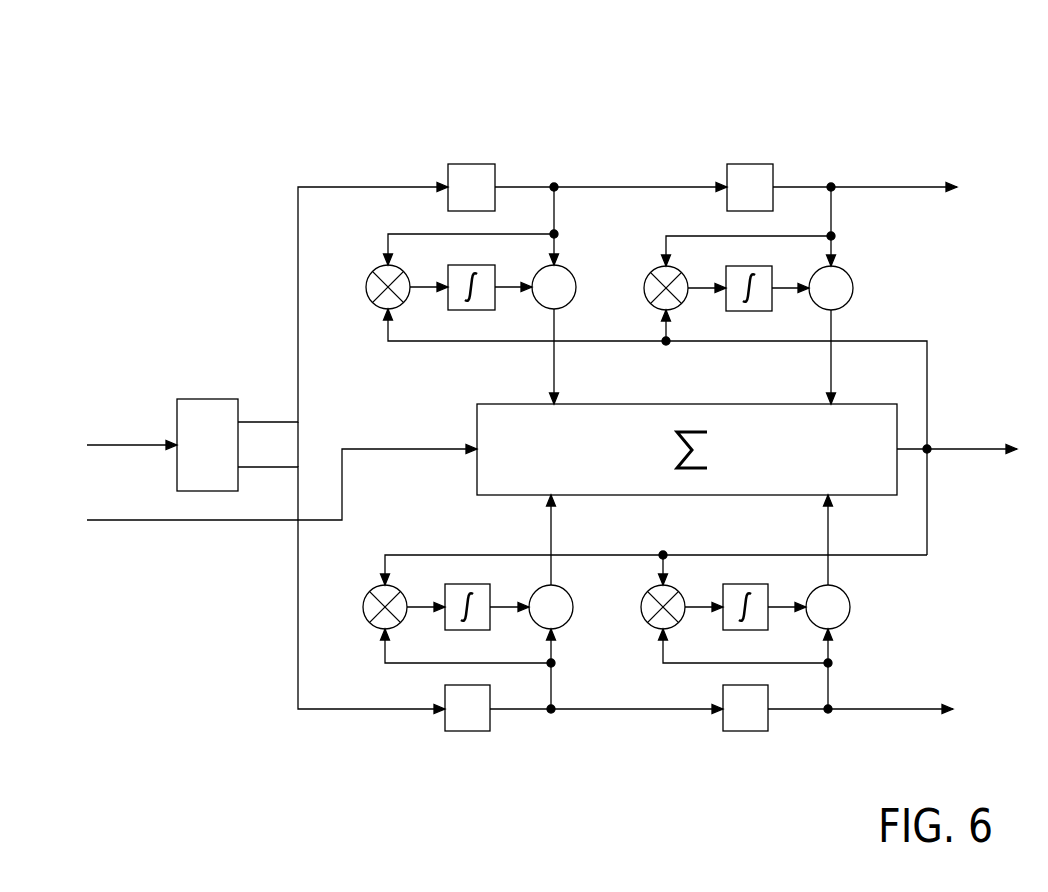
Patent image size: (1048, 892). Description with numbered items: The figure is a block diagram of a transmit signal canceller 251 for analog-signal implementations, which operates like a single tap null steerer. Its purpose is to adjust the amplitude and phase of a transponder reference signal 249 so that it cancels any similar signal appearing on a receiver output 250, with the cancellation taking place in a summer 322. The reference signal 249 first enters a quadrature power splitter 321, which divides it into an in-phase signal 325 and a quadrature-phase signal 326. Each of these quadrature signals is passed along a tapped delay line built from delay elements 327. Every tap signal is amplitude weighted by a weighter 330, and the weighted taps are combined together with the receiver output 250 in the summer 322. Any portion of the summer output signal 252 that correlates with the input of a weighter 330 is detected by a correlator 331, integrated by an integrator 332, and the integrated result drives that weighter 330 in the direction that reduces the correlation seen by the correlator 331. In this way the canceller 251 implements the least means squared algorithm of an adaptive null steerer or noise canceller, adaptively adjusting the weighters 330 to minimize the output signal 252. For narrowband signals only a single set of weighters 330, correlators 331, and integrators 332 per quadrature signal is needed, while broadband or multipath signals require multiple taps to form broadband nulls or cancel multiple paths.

The canceller 251 is at (583, 51).
The transponder reference signal 249 is at (112, 441).
The receiver output 250 is at (138, 522).
The quadrature power splitter 321 is at (207, 399).
The in-phase signal 325 is at (298, 275).
The quadrature-phase signal 326 is at (298, 622).
The summer 322 is at (477, 420).
The delay element 327 is at (745, 164).
The weighter 330 is at (850, 272).
The correlator 331 is at (369, 272).
The integrator 332 is at (447, 267).
The summer output signal 252 is at (966, 449).